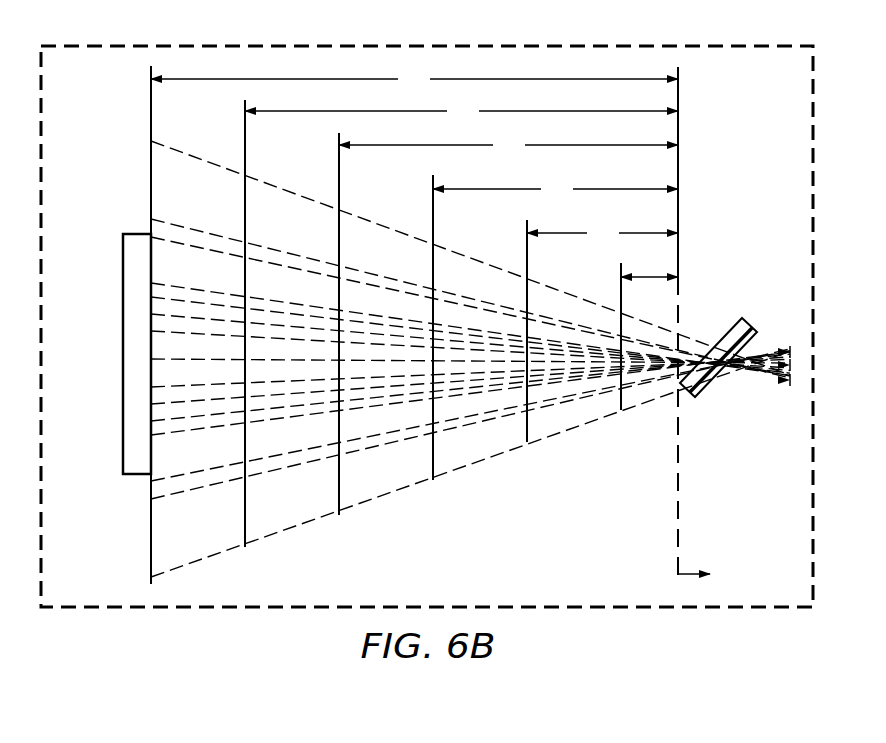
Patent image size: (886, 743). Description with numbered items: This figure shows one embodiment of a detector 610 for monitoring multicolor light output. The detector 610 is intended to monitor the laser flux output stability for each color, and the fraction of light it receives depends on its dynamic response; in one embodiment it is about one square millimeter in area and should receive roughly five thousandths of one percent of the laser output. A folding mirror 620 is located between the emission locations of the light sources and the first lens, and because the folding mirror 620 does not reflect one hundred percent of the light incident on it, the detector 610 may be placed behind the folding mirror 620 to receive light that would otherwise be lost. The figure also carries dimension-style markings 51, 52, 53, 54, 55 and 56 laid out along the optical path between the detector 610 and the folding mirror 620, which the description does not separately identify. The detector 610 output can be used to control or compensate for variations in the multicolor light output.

The distance from sixth lens plane to image plane 51 is at (649, 264).
The distance from fifth lens plane to image plane 52 is at (602, 233).
The distance from fourth lens plane to image plane 53 is at (555, 189).
The distance from third lens plane to image plane 54 is at (508, 145).
The distance from second lens plane to image plane 55 is at (461, 111).
The distance from first lens plane to image plane 56 is at (414, 79).
The detector 610 is at (123, 353).
The folding mirror 620 is at (748, 323).